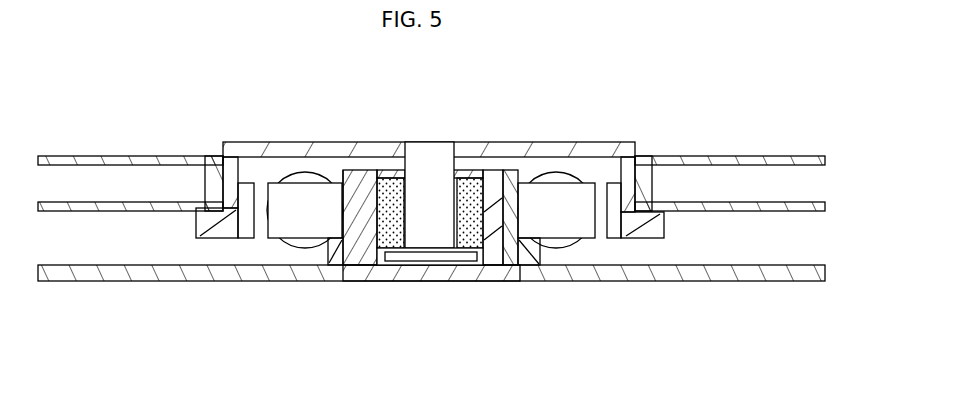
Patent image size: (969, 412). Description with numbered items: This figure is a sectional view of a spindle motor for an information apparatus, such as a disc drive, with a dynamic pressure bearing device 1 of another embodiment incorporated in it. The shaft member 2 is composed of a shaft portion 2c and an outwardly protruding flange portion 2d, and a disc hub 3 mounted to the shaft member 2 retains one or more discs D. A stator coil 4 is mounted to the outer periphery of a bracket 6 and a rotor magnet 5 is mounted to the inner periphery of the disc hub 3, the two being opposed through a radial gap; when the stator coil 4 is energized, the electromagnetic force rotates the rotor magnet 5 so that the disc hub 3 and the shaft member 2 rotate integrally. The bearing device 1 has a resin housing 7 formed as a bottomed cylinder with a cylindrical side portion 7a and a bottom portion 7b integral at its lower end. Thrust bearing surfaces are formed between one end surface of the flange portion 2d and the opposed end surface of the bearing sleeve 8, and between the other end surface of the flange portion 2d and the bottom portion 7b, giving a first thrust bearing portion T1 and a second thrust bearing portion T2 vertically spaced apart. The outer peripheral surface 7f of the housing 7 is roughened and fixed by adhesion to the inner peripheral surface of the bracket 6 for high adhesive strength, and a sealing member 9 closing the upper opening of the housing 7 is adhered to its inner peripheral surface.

The dynamic pressure bearing device 1 is at (484, 167).
The shaft member 2 is at (443, 141).
The shaft portion 2c is at (421, 148).
The flange portion 2d is at (445, 266).
The disc hub 3 is at (613, 141).
The stator coil 4 is at (584, 238).
The rotor magnet 5 is at (614, 238).
The bracket 6 is at (527, 283).
The housing 7 is at (369, 178).
The side portion 7a is at (338, 208).
The bottom portion 7b is at (480, 283).
The outer peripheral surface 7f is at (352, 242).
The bearing sleeve 8 is at (469, 152).
The sealing member 9 is at (388, 176).
The first thrust bearing portion T1 is at (375, 230).
The second thrust bearing portion T2 is at (404, 262).
The disc D is at (752, 158).